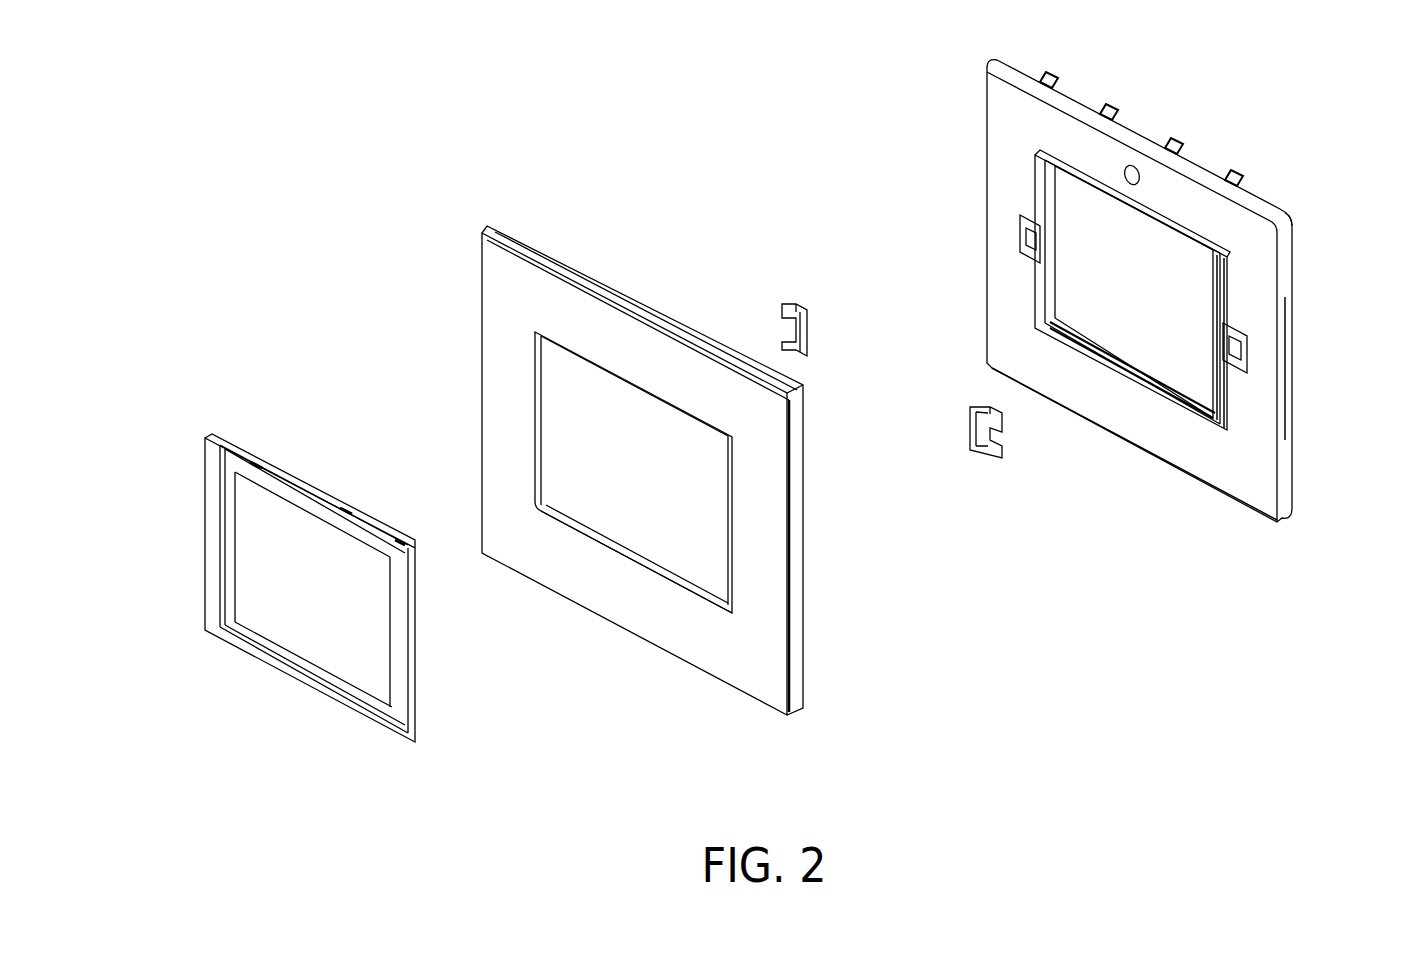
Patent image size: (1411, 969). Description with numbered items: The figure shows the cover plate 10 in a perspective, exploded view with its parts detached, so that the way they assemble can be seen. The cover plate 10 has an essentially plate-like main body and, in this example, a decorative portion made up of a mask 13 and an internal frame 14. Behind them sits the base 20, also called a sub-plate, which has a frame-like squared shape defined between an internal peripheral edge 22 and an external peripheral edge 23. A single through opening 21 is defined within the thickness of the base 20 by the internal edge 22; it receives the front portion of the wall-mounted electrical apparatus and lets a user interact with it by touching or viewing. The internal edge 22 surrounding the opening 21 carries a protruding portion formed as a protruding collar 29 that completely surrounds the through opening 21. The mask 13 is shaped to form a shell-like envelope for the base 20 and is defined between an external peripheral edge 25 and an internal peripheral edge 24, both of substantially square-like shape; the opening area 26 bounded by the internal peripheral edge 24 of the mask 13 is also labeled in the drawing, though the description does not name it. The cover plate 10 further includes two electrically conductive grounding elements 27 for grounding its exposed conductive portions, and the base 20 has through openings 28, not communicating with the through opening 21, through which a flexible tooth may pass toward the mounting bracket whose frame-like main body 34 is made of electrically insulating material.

The cover plate 10 is at (298, 152).
The mask 13 is at (506, 353).
The internal frame 14 is at (202, 461).
The base 20 is at (976, 105).
The through opening 21 is at (1071, 239).
The internal edge 22 is at (1088, 340).
The external peripheral edge 23 is at (1294, 477).
The internal peripheral edge 24 is at (600, 543).
The external peripheral edge 25 is at (795, 663).
The opening surface 26 is at (596, 416).
The grounding element 27 is at (786, 323).
The through opening 28 is at (1035, 240).
The protruding collar 29 is at (1232, 280).
The frame-like main body 34 is at (1238, 472).